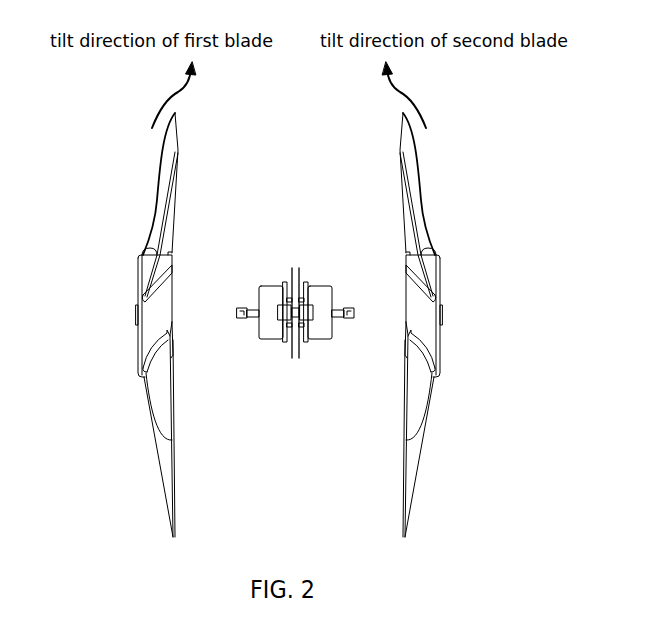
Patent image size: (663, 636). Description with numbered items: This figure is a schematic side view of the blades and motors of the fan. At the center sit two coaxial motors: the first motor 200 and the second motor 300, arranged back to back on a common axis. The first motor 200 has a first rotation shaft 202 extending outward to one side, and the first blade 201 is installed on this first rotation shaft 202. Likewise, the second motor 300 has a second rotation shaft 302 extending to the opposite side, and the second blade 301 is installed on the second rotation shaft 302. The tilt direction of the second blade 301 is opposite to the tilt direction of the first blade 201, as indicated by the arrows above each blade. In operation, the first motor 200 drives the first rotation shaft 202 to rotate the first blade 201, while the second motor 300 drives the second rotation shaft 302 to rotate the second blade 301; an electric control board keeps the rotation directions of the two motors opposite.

The first motor 200 is at (273, 285).
The first blade 201 is at (163, 187).
The first rotation shaft 202 is at (245, 310).
The second motor 300 is at (320, 283).
The second blade 301 is at (417, 197).
The second rotation shaft 302 is at (345, 312).